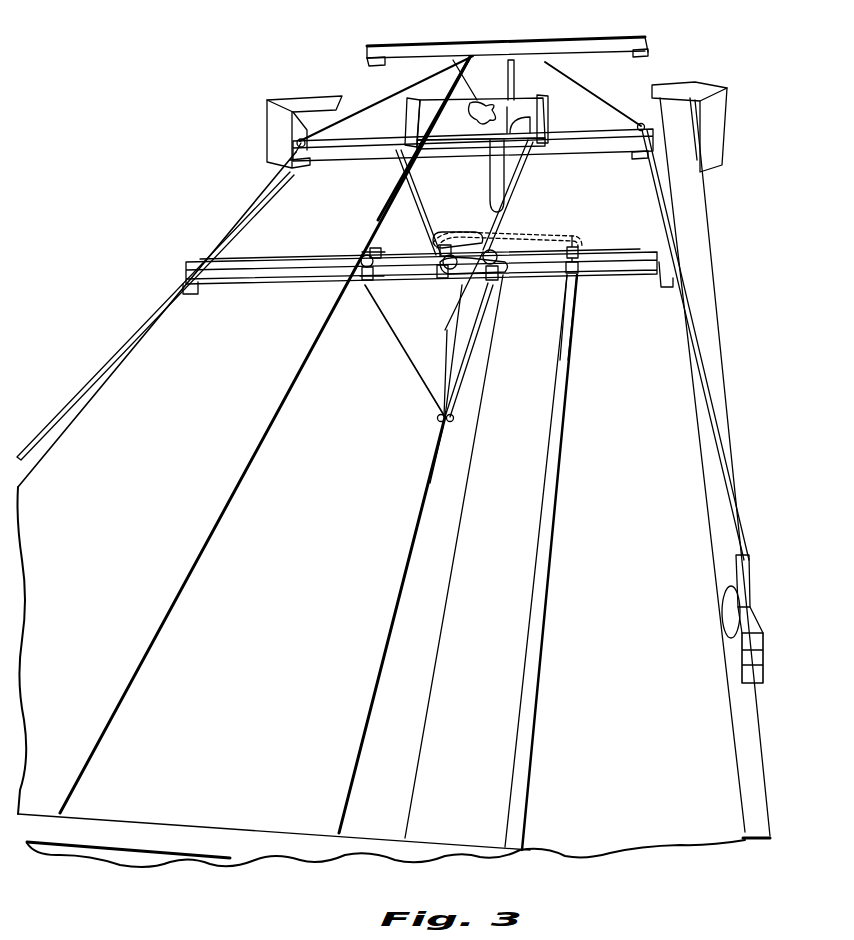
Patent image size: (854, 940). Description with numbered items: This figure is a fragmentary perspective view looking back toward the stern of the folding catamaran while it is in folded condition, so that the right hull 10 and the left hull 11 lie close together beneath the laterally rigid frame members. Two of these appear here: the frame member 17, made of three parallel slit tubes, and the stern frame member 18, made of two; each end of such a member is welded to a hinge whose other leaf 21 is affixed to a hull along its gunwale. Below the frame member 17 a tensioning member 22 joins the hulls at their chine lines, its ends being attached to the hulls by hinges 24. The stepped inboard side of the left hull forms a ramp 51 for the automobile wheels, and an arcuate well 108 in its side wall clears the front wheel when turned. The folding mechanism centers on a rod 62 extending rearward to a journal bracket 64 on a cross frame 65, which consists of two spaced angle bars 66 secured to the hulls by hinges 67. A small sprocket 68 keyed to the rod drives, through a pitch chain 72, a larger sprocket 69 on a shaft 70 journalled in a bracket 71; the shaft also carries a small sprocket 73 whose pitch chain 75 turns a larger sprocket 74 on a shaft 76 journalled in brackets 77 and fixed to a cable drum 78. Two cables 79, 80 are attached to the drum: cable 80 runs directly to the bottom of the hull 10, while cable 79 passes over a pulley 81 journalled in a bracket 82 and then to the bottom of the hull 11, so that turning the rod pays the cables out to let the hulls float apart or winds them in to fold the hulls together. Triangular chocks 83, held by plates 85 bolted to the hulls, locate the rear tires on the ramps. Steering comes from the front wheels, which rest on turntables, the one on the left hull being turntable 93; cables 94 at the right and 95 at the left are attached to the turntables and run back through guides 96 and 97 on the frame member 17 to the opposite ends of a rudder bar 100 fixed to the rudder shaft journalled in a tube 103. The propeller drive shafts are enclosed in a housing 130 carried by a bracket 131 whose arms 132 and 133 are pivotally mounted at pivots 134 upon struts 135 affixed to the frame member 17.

The right hull 10 is at (382, 462).
The left hull 11 is at (472, 556).
The frame member 17 is at (345, 156).
The frame member 18 is at (432, 46).
The hinge leaf 21 is at (296, 165).
The tensioning member 22 is at (372, 205).
The hinges 24 is at (405, 183).
The ramp 51 is at (708, 263).
The rod 62 is at (545, 603).
The journal bracket 64 is at (590, 252).
The cross frame 65 is at (624, 249).
The angle bars 66 is at (585, 272).
The hinges 67 is at (197, 282).
The small sprocket 68 is at (585, 241).
The larger sprocket 69 is at (438, 244).
The shaft 70 is at (440, 283).
The bracket 71 is at (436, 276).
The pitch chain 72 is at (580, 241).
The small sprocket 73 is at (456, 300).
The larger sprocket 74 is at (500, 280).
The pitch chain 75 is at (475, 238).
The shaft 76 is at (495, 293).
The brackets 77 is at (505, 248).
The cable drum 78 is at (520, 226).
The cable 79 is at (412, 356).
The cable 80 is at (463, 363).
The pulley 81 is at (364, 250).
The bracket 82 is at (366, 284).
The chocks 83 is at (268, 134).
The plates 85 is at (314, 101).
The turntable 93 is at (730, 652).
The cable 94 is at (58, 410).
The cable 95 is at (722, 456).
The guide 96 is at (292, 148).
The guide 97 is at (641, 123).
The rudder bar 100 is at (500, 50).
The tube 103 is at (462, 74).
The arcuate well 108 is at (752, 783).
The housing 130 is at (482, 200).
The bracket 131 is at (526, 98).
The arm 132 is at (567, 93).
The arm 133 is at (418, 115).
The pivot mounts 134 is at (413, 133).
The struts 135 is at (427, 138).